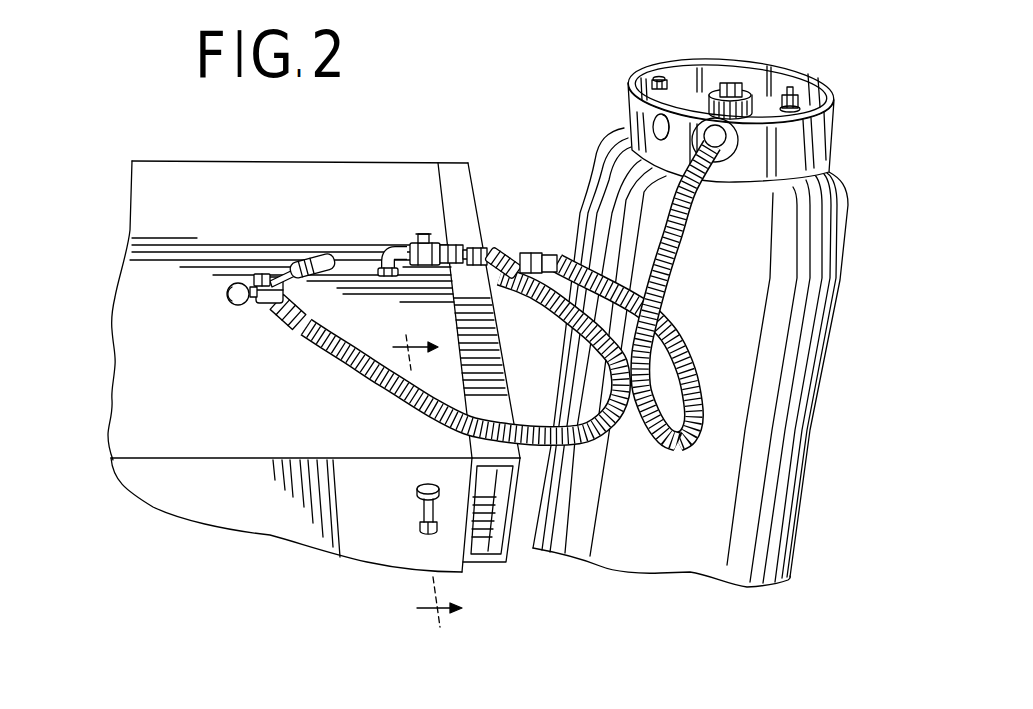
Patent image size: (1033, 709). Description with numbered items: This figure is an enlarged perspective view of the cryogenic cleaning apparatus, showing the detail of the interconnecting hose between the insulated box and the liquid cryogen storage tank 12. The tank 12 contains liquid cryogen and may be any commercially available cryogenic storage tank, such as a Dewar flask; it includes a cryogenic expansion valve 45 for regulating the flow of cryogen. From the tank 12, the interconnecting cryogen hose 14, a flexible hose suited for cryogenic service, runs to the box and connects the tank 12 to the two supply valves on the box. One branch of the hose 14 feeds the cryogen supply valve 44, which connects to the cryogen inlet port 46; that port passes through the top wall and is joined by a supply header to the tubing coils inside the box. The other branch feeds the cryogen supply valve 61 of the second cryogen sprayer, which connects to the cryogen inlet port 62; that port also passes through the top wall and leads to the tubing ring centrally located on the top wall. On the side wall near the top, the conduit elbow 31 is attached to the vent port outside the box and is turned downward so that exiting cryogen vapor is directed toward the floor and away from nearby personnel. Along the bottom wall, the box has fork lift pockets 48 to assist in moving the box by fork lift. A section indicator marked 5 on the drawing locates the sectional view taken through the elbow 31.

The liquid cryogen storage tank 12 is at (597, 148).
The interconnecting cryogen hose 14 is at (681, 236).
The cryogenic expansion valve 45 is at (733, 82).
The cryogen supply valve 44 is at (423, 235).
The cryogen inlet port 46 is at (378, 268).
The cryogen supply valve 61 is at (264, 274).
The cryogen inlet port 62 is at (229, 297).
The conduit elbow 31 is at (422, 506).
The fork lift pocket 48 is at (500, 567).
The section line 5- 5 is at (423, 477).